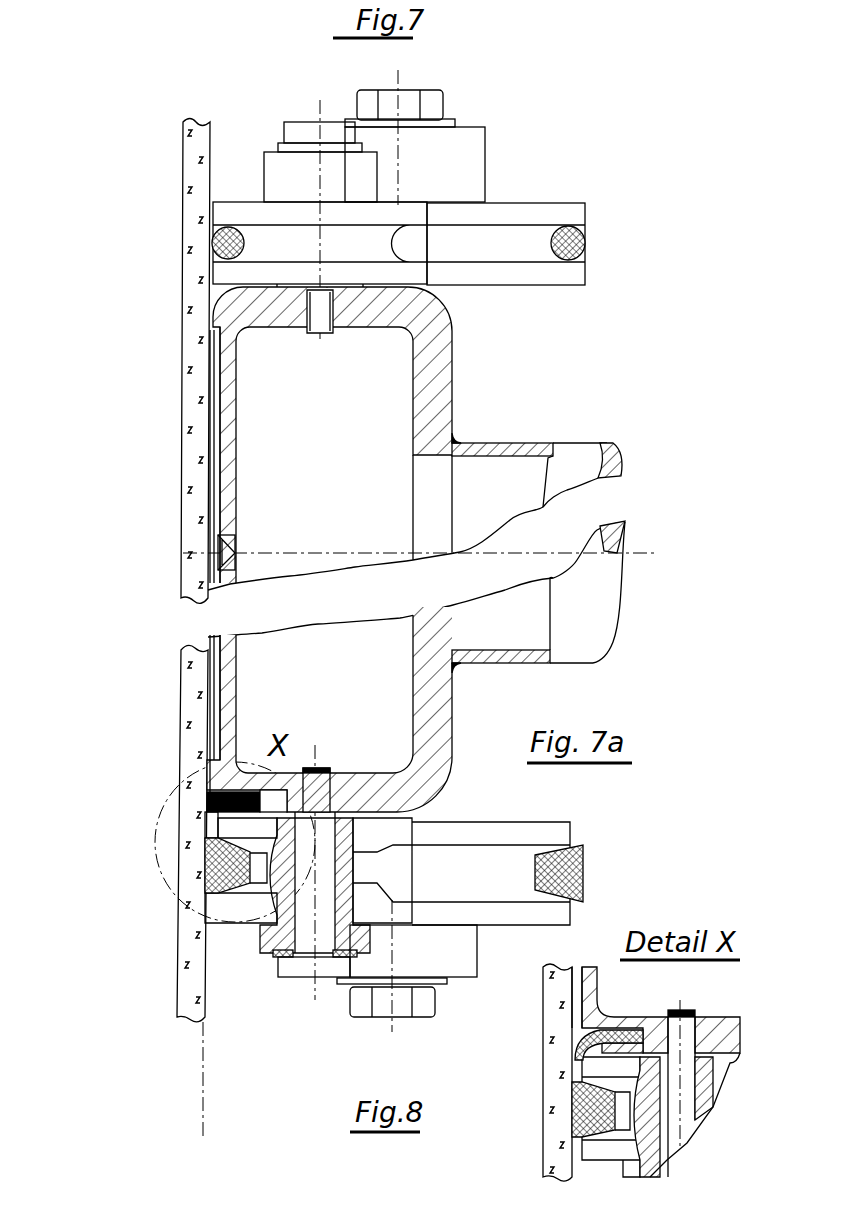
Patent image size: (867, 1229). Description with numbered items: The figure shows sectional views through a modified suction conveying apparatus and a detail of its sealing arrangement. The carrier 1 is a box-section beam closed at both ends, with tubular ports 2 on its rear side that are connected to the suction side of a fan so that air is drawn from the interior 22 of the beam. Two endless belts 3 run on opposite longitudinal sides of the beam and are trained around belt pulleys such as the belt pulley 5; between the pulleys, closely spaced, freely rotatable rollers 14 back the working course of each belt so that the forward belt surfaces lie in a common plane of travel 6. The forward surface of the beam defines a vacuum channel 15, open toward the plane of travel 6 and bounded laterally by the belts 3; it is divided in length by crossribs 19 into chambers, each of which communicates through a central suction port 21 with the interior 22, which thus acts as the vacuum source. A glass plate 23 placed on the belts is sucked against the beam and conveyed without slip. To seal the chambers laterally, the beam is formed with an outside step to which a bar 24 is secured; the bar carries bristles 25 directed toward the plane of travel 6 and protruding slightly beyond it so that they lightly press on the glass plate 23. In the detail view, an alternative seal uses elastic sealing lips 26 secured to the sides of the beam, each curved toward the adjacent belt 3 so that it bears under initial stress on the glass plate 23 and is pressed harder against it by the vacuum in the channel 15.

In FIG. 7, the carrier 1 is at (440, 370).
In FIG. 7A, the carrier 1 is at (428, 773).
In FIG. 7, the tubular ports 2 is at (577, 475).
In FIG. 7A, the tubular ports 2 is at (520, 657).
In FIG. 7, the endless belts 3 is at (568, 243).
In FIG. 7A, the endless belts 3 is at (583, 857).
In FIG. 8, the endless belts 3 is at (556, 1123).
In FIG. 7, the belt pulley 5 is at (549, 212).
In FIG. 7A, the belt pulley 5 is at (527, 832).
In FIG. 7A, the plane of travel 6 is at (202, 1080).
In FIG. 7, the rollers 14 is at (262, 210).
In FIG. 7A, the rollers 14 is at (235, 910).
In FIG. 7, the vacuum channel 15 is at (220, 433).
In FIG. 7A, the vacuum channel 15 is at (218, 700).
In FIG. 7, the crossribs 19 is at (216, 497).
In FIG. 7A, the crossribs 19 is at (214, 723).
In FIG. 8, the crossribs 19 is at (580, 992).
In FIG. 7, the suction port 21 is at (220, 541).
In FIG. 7, the interior 22 is at (322, 449).
In FIG. 7, the glass plate 23 is at (188, 298).
In FIG. 7A, the glass plate 23 is at (188, 973).
In FIG. 8, the glass plate 23 is at (556, 1031).
In FIG. 7A, the bar 24 is at (212, 769).
In FIG. 7A, the bristles 25 is at (210, 798).
In FIG. 8, the sealing lips 26 is at (556, 1060).